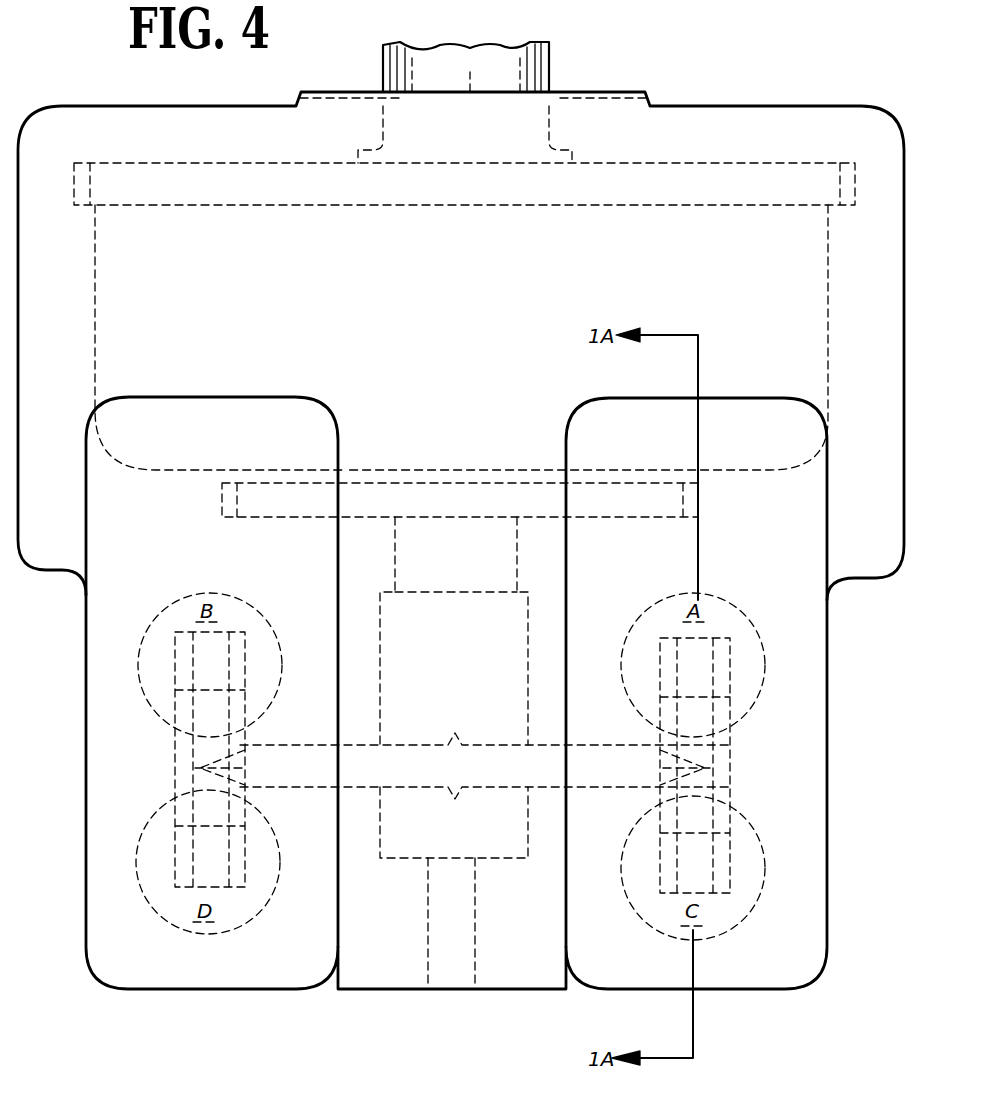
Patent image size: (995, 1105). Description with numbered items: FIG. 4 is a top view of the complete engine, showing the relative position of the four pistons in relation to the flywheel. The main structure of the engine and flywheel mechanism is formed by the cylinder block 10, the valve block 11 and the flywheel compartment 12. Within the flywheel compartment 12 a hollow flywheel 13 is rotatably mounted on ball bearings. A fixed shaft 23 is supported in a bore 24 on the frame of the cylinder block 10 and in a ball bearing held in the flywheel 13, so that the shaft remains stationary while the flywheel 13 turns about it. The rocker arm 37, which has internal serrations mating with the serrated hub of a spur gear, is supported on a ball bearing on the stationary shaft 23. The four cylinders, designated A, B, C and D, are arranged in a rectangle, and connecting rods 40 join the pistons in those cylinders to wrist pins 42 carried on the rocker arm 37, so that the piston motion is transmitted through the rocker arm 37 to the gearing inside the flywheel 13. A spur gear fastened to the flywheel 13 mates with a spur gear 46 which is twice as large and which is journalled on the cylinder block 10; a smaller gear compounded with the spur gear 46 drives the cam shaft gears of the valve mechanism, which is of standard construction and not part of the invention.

The cylinder block 10 is at (714, 106).
The valve block 11 is at (92, 716).
The flywheel compartment 12 is at (872, 362).
The hollow flywheel 13 is at (95, 308).
The fixed shaft 23 is at (452, 922).
The bore 24 is at (420, 960).
The rocker arm 37 is at (518, 640).
The connecting rods 40 is at (245, 660).
The wrist pins 42 is at (175, 784).
The spur gear 46 is at (670, 520).